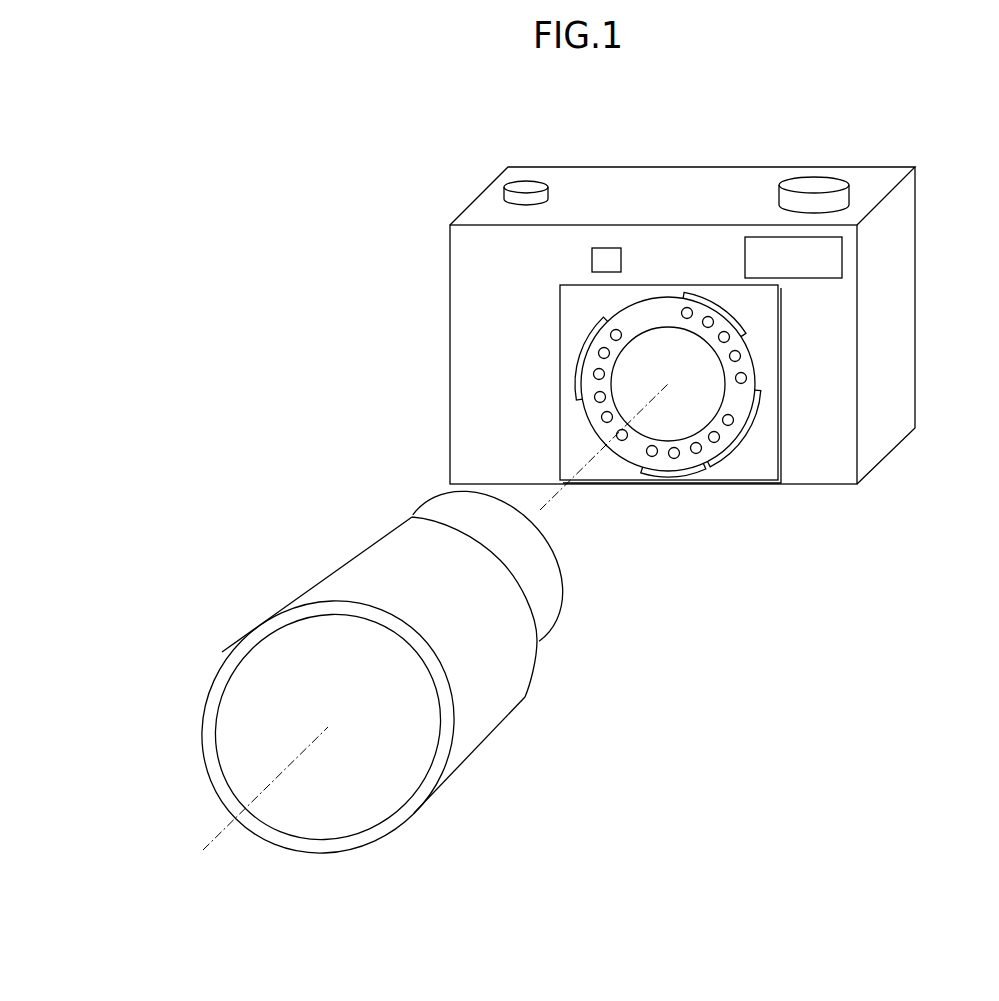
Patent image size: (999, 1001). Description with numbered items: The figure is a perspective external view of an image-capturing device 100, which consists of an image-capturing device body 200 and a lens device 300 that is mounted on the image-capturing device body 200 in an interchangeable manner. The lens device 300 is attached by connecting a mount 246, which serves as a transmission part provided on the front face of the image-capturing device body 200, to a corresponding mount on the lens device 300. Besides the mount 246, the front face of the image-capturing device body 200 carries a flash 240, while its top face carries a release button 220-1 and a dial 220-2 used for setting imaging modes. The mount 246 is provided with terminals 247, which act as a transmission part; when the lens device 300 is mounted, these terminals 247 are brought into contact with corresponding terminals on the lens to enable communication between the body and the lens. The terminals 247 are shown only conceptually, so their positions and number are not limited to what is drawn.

The image-capturing device 100 is at (226, 404).
The image-capturing device body 200 is at (822, 462).
The release button 220-1 is at (531, 182).
The dial 220-2 is at (819, 178).
The flash 240 is at (830, 257).
The mount 246 is at (738, 402).
The terminals 247 is at (572, 392).
The lens device 300 is at (502, 687).